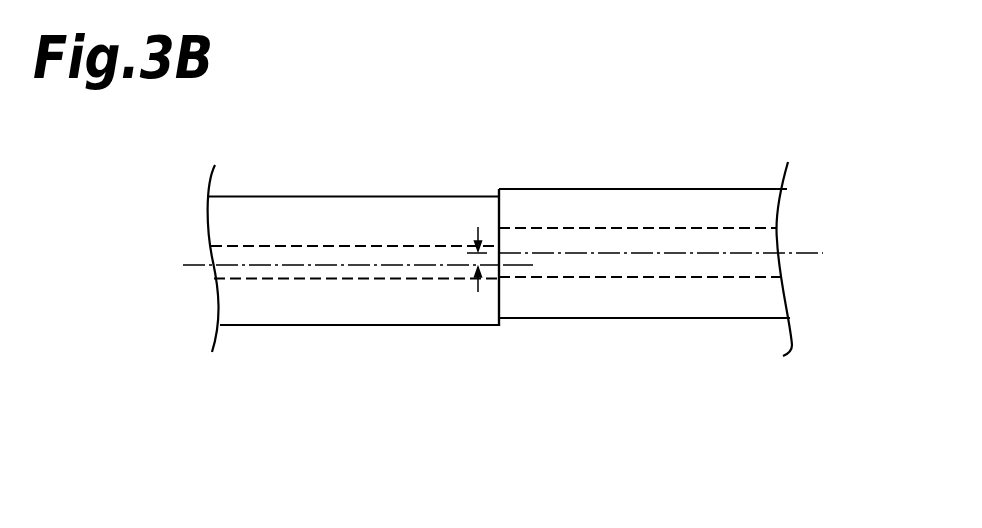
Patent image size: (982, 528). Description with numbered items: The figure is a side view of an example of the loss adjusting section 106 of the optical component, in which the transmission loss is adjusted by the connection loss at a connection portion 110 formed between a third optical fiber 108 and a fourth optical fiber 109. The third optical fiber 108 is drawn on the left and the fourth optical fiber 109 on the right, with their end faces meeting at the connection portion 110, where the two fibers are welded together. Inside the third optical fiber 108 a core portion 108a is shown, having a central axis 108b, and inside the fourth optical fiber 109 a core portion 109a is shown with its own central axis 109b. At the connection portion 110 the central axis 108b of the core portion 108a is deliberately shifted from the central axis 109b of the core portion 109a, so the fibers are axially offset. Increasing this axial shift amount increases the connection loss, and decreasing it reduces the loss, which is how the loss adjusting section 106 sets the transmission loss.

The third optical fiber 108 is at (377, 197).
The core portion of the third optical fiber 108a is at (268, 246).
The central axis of the core portion of the third optical fiber 108b is at (318, 265).
The fourth optical fiber 109 is at (642, 210).
The core portion of the fourth optical fiber 109a is at (688, 238).
The central axis of the core portion of the fourth optical fiber 109b is at (798, 253).
The connection portion 110 is at (520, 347).
The loss adjusting section 106 is at (493, 311).